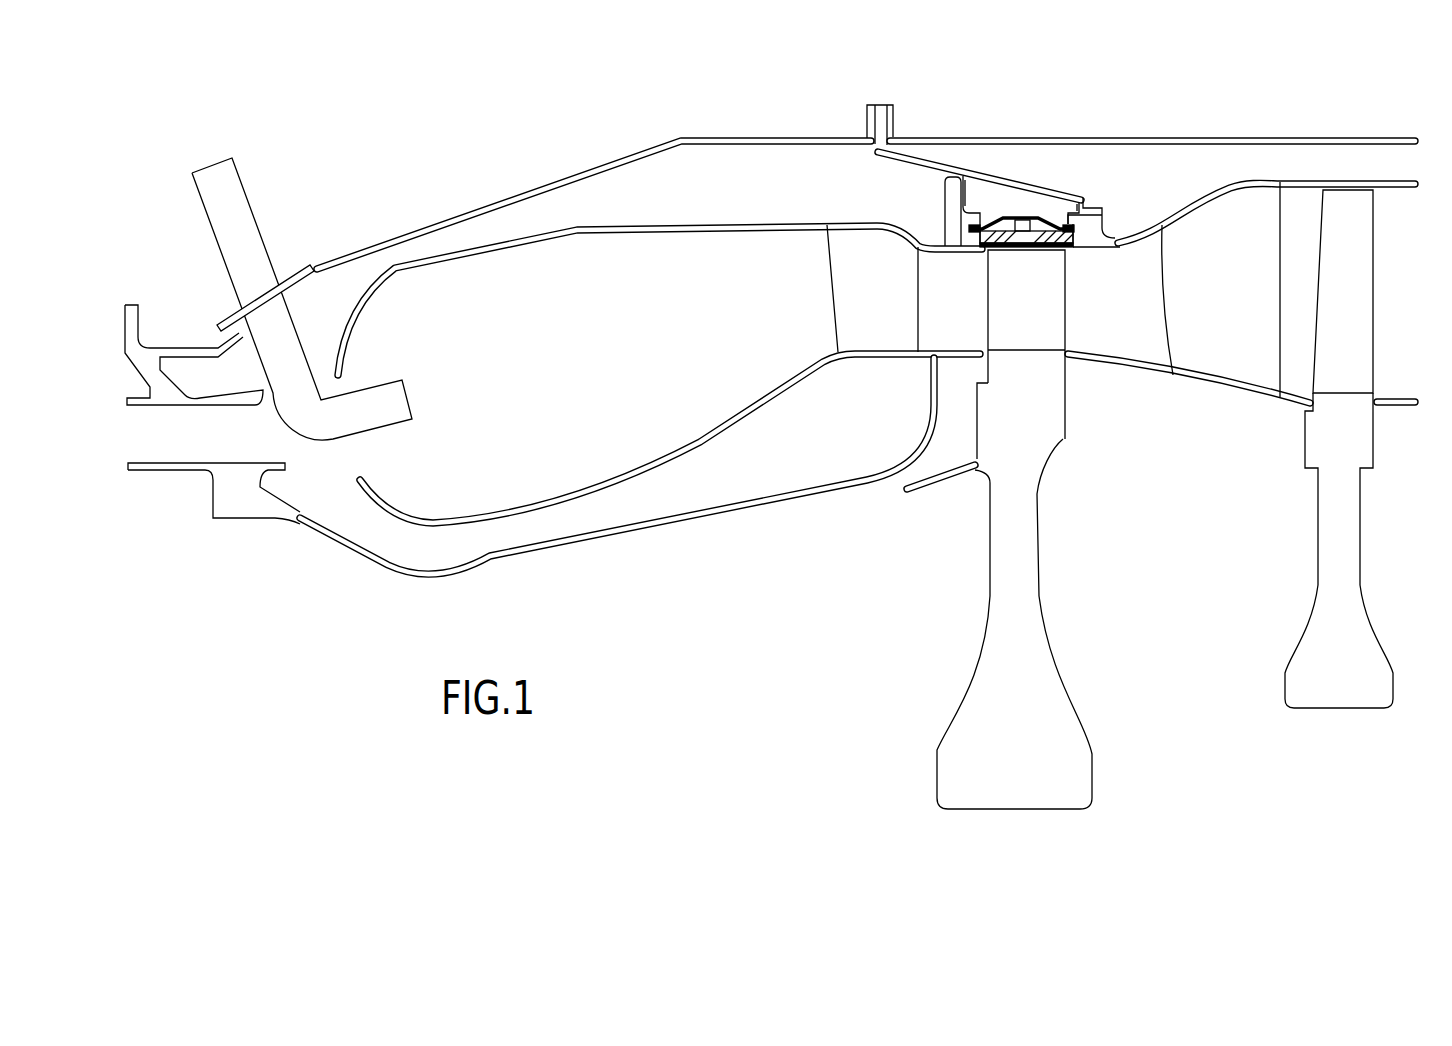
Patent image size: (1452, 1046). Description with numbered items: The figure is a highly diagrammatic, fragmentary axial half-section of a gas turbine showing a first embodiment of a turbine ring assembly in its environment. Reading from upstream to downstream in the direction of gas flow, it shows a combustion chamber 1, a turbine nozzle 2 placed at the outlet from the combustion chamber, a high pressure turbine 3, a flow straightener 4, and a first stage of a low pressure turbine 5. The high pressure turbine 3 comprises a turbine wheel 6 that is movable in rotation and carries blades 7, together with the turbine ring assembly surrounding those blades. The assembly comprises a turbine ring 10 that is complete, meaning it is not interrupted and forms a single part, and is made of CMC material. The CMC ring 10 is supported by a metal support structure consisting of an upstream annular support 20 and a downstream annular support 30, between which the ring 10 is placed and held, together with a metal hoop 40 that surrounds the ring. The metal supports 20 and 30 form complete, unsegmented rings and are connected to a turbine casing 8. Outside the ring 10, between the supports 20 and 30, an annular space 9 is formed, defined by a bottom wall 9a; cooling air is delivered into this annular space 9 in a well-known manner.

The combustion chamber 1 is at (727, 223).
The turbine nozzle 2 is at (880, 238).
The high pressure turbine 3 is at (1076, 263).
The flow straightener 4 is at (1220, 225).
The first stage of a low pressure turbine 5 is at (1345, 208).
The turbine wheel 6 is at (1070, 432).
The blades 7 is at (1035, 313).
The turbine casing 8 is at (1192, 137).
The annular space 9 is at (1023, 202).
The bottom wall 9a is at (1015, 182).
The turbine ring 10 is at (1008, 233).
The upstream annular support 20 is at (950, 228).
The downstream annular support 30 is at (1100, 233).
The metal hoop 40 is at (1042, 213).